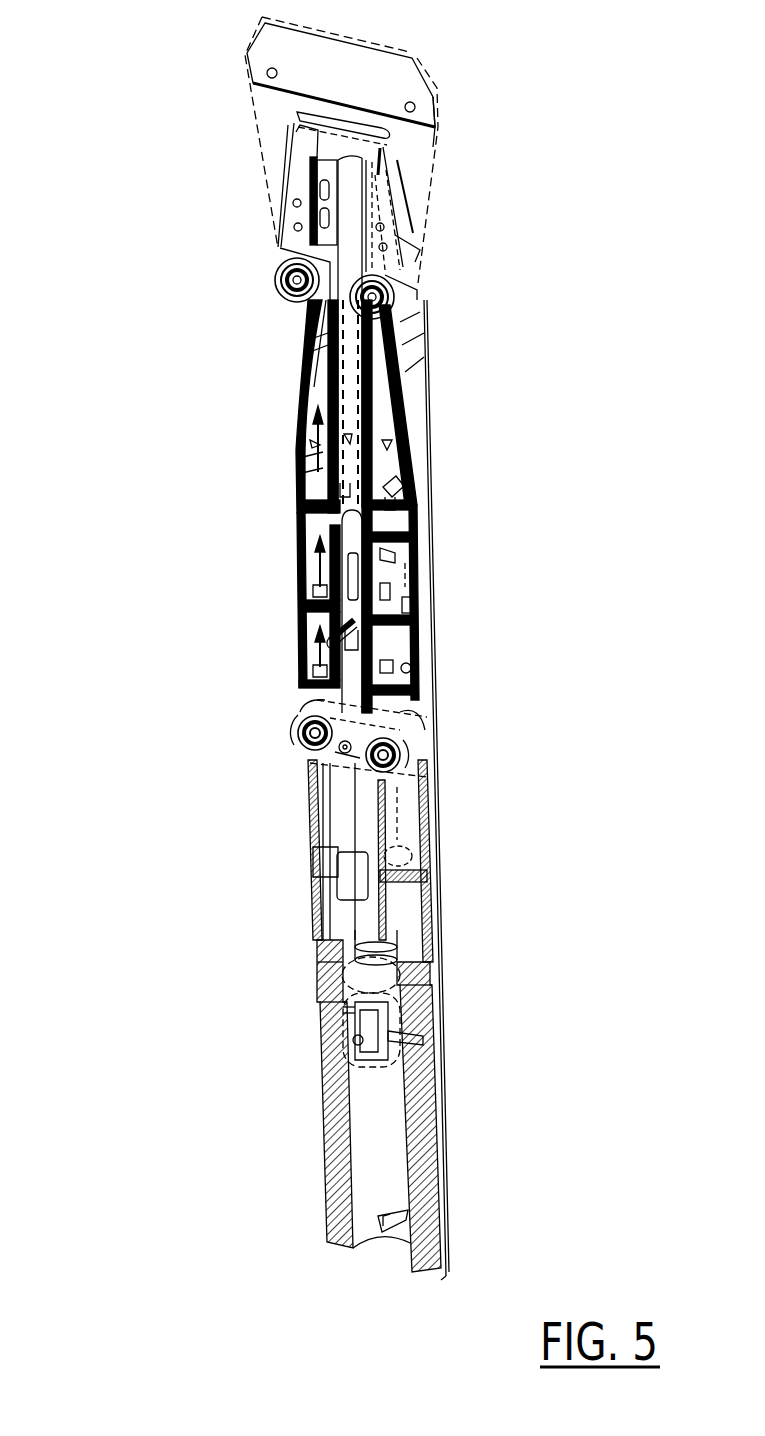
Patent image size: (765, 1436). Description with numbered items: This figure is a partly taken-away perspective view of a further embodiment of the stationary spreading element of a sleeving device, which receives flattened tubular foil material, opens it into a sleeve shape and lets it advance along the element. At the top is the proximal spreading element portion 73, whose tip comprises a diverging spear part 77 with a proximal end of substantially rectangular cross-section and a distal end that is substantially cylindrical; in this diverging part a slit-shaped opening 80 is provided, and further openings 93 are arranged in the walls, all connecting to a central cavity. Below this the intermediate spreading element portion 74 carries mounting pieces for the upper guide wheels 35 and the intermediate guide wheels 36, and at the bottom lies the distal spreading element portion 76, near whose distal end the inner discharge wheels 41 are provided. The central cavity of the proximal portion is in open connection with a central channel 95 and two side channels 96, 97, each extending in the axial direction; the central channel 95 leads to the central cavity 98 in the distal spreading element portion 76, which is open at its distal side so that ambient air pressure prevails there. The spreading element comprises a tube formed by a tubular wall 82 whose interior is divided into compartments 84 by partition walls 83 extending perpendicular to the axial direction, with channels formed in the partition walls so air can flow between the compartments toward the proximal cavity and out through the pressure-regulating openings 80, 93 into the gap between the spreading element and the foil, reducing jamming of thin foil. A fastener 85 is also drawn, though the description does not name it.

The proximal spreading element portion 73 is at (150, 198).
The distal spreading element portion 76 is at (388, 68).
The diverging spear part 77 is at (438, 137).
The slit-shaped opening 80 is at (313, 107).
The side channel 96 is at (312, 158).
The central channel 95 is at (343, 185).
The side channel 97 is at (368, 170).
The further opening 93 is at (397, 208).
The upper guide wheel 35 is at (280, 257).
The fastener 85 is at (393, 473).
The compartment 84 is at (310, 547).
The tubular wall 82 is at (420, 608).
The partition wall 83 is at (405, 643).
The intermediate spreading element portion 74 is at (432, 671).
The intermediate guide wheel 36 is at (315, 698).
The central cavity 98 is at (377, 1137).
The inner discharge wheel 41 is at (388, 1220).